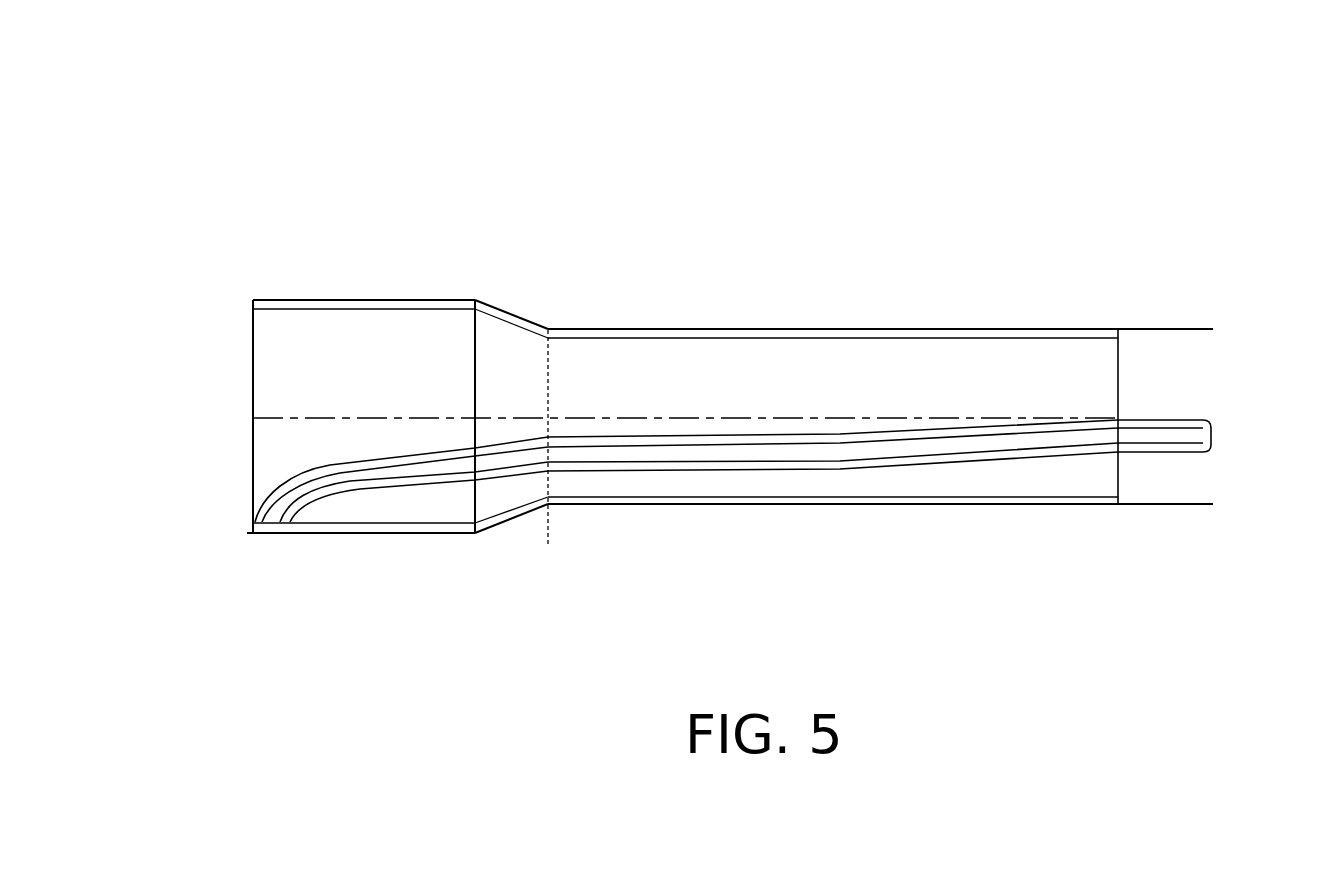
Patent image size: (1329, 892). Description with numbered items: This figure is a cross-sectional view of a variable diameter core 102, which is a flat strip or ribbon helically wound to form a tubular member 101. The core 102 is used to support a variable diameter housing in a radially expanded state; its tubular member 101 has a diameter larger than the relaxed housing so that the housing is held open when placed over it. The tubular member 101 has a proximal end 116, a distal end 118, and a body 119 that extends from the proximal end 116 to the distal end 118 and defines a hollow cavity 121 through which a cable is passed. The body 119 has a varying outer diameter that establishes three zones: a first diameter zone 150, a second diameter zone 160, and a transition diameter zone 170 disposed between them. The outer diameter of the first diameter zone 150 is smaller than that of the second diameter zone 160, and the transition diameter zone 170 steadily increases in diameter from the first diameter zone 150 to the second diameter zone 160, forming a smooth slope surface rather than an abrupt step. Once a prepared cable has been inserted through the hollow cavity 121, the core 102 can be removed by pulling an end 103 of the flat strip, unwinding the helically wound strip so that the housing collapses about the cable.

The variable diameter core 102 is at (1156, 185).
The tubular member 101 is at (312, 611).
The proximal end 116 is at (248, 307).
The second diameter zone 160 is at (342, 300).
The hollow cavity 121 is at (288, 368).
The transition diameter zone 170 is at (512, 320).
The first diameter zone 150 is at (872, 327).
The distal end 118 is at (1213, 328).
The body 119 is at (543, 589).
The end of the flat strip 103 is at (1177, 438).